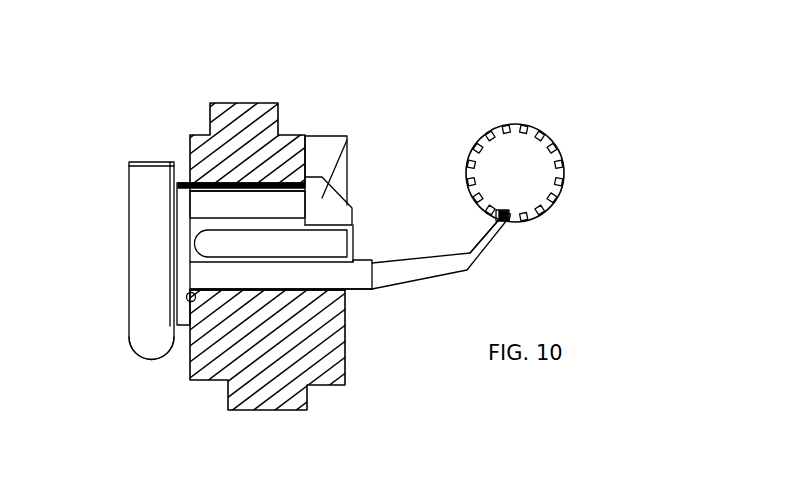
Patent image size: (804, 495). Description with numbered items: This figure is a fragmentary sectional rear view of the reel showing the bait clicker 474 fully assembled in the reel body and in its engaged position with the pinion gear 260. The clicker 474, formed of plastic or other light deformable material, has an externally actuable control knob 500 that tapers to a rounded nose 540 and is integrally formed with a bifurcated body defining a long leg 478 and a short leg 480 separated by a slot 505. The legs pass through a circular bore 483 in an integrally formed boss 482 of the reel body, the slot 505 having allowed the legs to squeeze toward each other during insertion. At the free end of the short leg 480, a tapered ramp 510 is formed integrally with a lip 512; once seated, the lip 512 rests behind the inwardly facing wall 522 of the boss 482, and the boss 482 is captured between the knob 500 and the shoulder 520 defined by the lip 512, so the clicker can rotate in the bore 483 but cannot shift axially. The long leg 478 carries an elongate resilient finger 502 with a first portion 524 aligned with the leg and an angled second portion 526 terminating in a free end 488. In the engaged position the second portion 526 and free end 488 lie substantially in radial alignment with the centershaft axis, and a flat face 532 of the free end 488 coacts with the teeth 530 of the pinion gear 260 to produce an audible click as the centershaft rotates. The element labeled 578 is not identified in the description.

The pinion gear 260 is at (545, 144).
The bait clicker 474 is at (268, 292).
The long leg 478 is at (332, 281).
The short leg 480 is at (223, 223).
The boss 482 is at (192, 141).
The circular bore 483 is at (230, 188).
The free end 488 is at (501, 222).
The control knob 500 is at (137, 211).
The resilient finger 502 is at (477, 247).
The slot 505 is at (285, 255).
The tapered ramp 510 is at (348, 204).
The lip 512 is at (347, 140).
The shoulder 520 is at (300, 187).
The inwardly facing wall 522 is at (313, 165).
The first portion 524 is at (423, 270).
The second portion 526 is at (484, 249).
The teeth 530 is at (528, 126).
The flat face 532 is at (500, 224).
The rounded nose 540 is at (148, 348).
The strip 578 is at (190, 310).